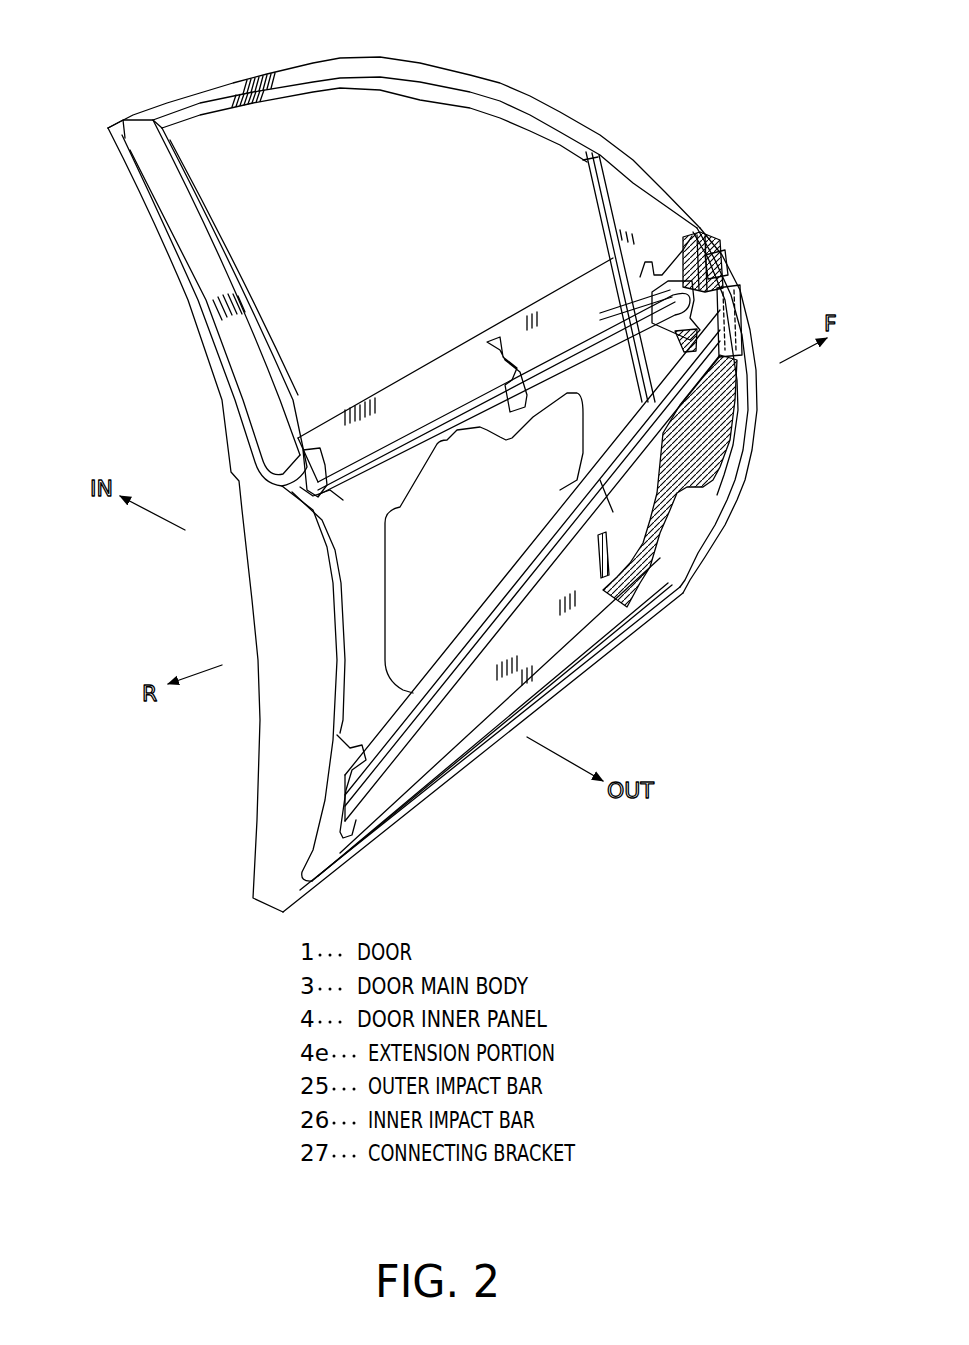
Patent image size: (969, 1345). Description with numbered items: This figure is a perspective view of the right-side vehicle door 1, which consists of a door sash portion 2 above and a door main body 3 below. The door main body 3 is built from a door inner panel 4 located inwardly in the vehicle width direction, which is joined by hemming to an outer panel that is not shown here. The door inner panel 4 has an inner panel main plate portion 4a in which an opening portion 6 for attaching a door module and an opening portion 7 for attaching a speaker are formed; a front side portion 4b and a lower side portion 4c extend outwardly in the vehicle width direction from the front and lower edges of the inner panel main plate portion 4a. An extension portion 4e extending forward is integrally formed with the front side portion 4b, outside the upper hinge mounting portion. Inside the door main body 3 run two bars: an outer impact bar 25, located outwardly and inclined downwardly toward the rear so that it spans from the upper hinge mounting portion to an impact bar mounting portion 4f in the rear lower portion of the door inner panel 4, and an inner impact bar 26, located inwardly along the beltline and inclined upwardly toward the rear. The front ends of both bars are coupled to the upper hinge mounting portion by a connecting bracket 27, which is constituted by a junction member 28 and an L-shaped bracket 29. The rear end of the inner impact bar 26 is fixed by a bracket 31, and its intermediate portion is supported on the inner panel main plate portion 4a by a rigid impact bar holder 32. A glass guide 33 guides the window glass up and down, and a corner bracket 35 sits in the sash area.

The door 1 is at (657, 137).
The door sash portion 2 is at (330, 58).
The door main body 3 is at (262, 750).
The door inner panel 4 is at (402, 372).
The inner panel main plate portion 4a is at (457, 375).
The front side portion 4b is at (712, 424).
The lower side portion 4c is at (553, 643).
The extension portion 4e is at (730, 283).
The impact bar mounting portion 4f is at (337, 802).
The opening portion 6 is at (410, 505).
The opening portion 7 is at (613, 510).
The outer impact bar 25 is at (517, 567).
The inner impact bar 26 is at (467, 410).
The connecting bracket 27 is at (667, 338).
The junction member 28 is at (693, 233).
The bracket 29 is at (718, 262).
The bracket 31 is at (325, 497).
The impact bar holder 32 is at (517, 397).
The glass guide 33 is at (626, 300).
The corner bracket 35 is at (618, 178).